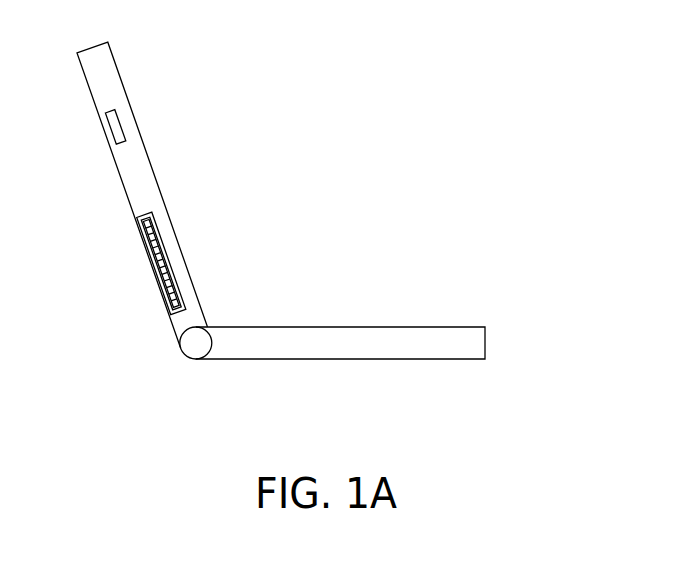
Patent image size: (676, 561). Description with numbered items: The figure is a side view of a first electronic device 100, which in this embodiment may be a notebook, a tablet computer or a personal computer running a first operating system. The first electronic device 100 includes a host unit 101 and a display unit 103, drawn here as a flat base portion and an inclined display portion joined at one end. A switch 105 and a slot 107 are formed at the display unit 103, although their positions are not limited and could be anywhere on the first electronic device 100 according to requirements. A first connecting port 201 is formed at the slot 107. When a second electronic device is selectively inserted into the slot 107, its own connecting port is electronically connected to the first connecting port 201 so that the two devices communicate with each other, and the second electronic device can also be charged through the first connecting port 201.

The first electronic device 100 is at (609, 413).
The host unit 101 is at (477, 343).
The display unit 103 is at (112, 55).
The switch 105 is at (115, 139).
The slot 107 is at (160, 235).
The first connecting port 201 is at (153, 265).